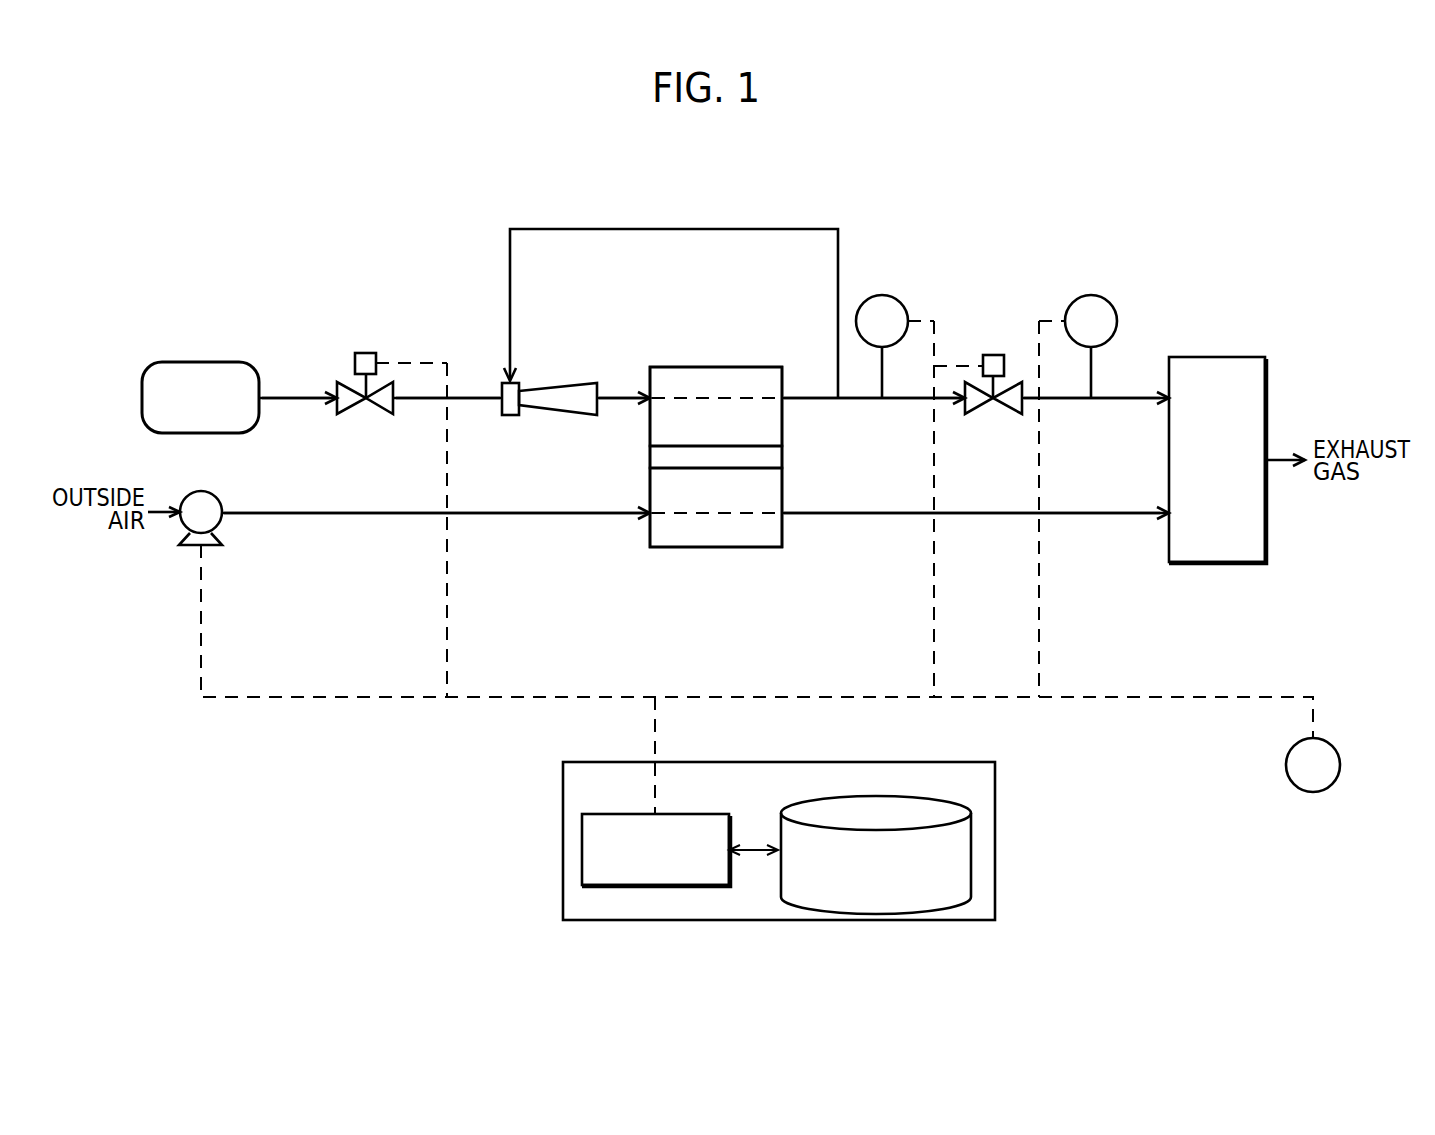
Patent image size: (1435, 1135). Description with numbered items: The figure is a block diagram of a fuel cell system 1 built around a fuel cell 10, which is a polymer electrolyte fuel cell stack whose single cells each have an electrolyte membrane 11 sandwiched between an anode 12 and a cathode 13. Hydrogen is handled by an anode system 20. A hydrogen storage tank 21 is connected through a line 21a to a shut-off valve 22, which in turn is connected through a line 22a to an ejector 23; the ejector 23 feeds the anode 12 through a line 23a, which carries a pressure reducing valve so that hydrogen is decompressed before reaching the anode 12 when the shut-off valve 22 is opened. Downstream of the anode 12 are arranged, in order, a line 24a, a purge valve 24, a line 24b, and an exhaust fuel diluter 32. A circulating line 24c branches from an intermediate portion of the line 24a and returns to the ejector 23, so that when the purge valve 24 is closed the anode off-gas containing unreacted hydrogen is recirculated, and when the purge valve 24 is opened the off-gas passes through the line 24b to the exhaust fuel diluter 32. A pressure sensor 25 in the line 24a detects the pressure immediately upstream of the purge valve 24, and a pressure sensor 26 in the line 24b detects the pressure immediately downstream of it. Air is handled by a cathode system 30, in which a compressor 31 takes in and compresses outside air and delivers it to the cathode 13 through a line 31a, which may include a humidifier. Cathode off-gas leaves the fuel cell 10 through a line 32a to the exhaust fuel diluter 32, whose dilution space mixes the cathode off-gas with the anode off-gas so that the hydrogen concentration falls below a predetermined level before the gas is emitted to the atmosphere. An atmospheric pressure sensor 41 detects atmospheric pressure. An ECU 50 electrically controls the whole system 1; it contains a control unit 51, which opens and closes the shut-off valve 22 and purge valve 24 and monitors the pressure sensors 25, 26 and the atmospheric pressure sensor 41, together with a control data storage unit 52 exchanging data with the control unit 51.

The fuel cell system 1 is at (1123, 255).
The fuel cell 10 is at (662, 335).
The electrolyte membrane 11 is at (776, 456).
The anode 12 is at (683, 367).
The cathode 13 is at (681, 548).
The anode system 20 is at (175, 330).
The hydrogen storage tank 21 is at (225, 362).
The line 21a is at (288, 400).
The shut-off valve 22 is at (366, 353).
The line 22a is at (422, 400).
The ejector 23 is at (546, 385).
The line 23a is at (624, 400).
The purge valve 24 is at (991, 355).
The line 24a is at (826, 400).
The line 24b is at (1124, 398).
The line (circulating system) 24c is at (655, 229).
The pressure sensor (second pressure detector) 25 is at (878, 295).
The pressure sensor (first pressure detector) 26 is at (1088, 295).
The cathode system 30 is at (172, 568).
The compressor 31 is at (204, 491).
The line 31a is at (300, 515).
The exhaust fuel diluter 32 is at (1208, 357).
The line 32a is at (1124, 513).
The atmospheric pressure sensor 41 is at (1305, 792).
The ECU 50 is at (953, 762).
The control unit 51 is at (685, 814).
The control data storage unit 52 is at (905, 800).